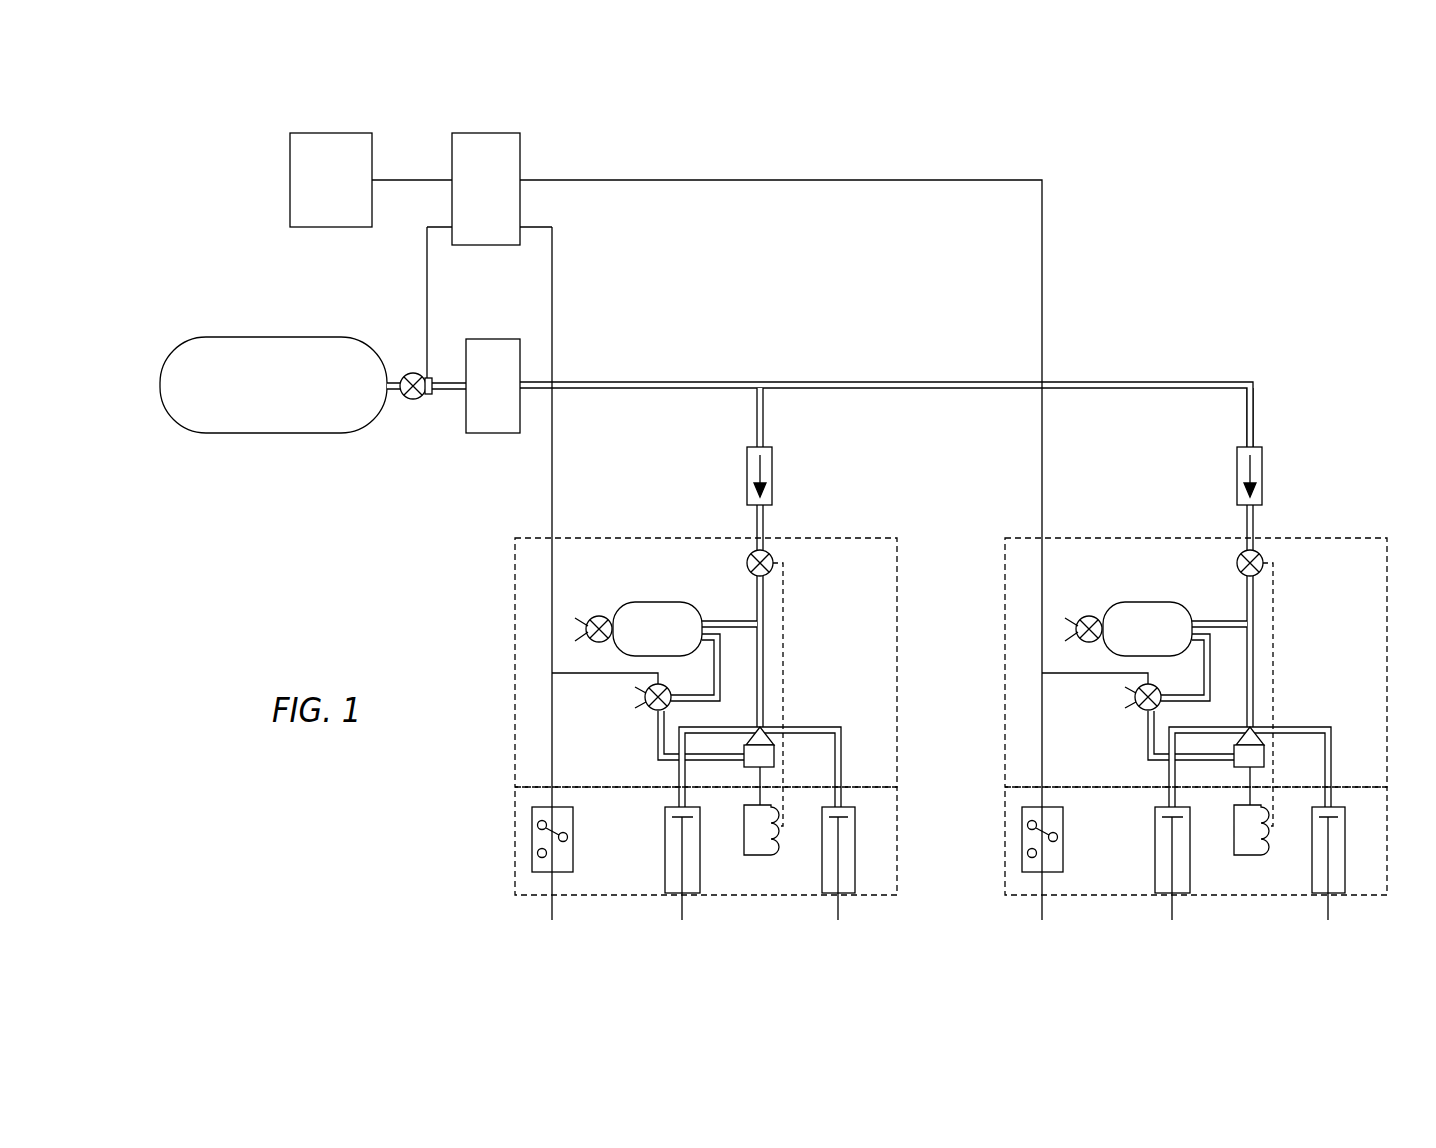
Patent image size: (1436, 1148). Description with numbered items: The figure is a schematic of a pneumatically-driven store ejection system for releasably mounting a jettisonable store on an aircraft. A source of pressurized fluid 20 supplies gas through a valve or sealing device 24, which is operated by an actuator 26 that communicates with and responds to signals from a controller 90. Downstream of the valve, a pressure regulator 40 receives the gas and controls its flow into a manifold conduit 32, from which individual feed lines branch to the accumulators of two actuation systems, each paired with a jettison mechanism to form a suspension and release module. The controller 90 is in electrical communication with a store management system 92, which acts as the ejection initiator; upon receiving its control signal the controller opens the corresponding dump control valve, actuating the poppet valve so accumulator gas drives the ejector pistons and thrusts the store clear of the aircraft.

The source of pressurized fluid 20 is at (297, 336).
The valve or sealing device 24 is at (409, 398).
The actuator 26 is at (429, 395).
The manifold conduit 32 is at (900, 383).
The pressure regulator 40 is at (492, 338).
The controller 90 is at (475, 132).
The store management system 92 is at (322, 132).